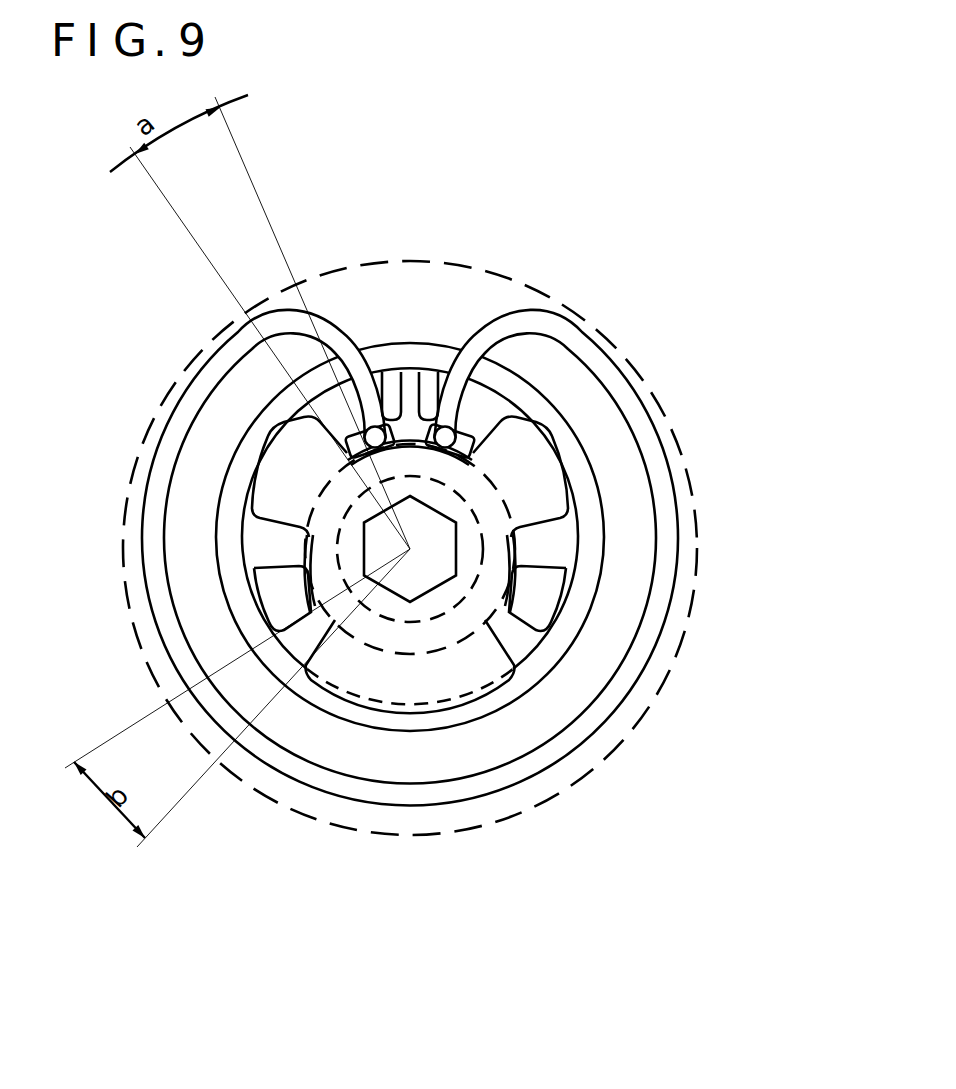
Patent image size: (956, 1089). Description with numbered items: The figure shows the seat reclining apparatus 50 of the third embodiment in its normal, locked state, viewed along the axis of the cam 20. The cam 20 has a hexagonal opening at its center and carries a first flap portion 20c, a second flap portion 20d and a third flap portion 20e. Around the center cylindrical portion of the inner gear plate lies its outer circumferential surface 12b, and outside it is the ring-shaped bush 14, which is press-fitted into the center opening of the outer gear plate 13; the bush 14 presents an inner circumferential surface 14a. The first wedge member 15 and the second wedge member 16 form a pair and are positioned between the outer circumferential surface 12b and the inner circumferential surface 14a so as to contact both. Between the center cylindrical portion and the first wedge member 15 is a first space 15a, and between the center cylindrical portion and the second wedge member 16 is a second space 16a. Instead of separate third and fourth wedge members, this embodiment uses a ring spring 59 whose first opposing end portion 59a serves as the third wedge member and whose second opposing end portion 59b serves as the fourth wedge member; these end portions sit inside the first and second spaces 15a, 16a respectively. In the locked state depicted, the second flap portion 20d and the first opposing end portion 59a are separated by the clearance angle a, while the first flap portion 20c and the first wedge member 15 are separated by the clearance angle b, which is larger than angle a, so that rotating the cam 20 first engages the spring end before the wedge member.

The outer circumferential surface 12b is at (408, 440).
The outer gear plate 13 is at (448, 308).
The bush 14 is at (406, 357).
The inner circumferential surface 14a is at (399, 397).
The first wedge member 15 is at (263, 550).
The first space 15a is at (346, 457).
The second wedge member 16 is at (546, 552).
The second space 16a is at (461, 447).
The cam 20 is at (486, 736).
The first flap portion 20c is at (403, 682).
The second flap portion 20d is at (283, 487).
The third flap portion 20e is at (523, 475).
The seat reclining apparatus 50 is at (230, 800).
The ring spring 59 is at (303, 768).
The first opposing end portion 59a is at (366, 430).
The second opposing end portion 59b is at (441, 433).